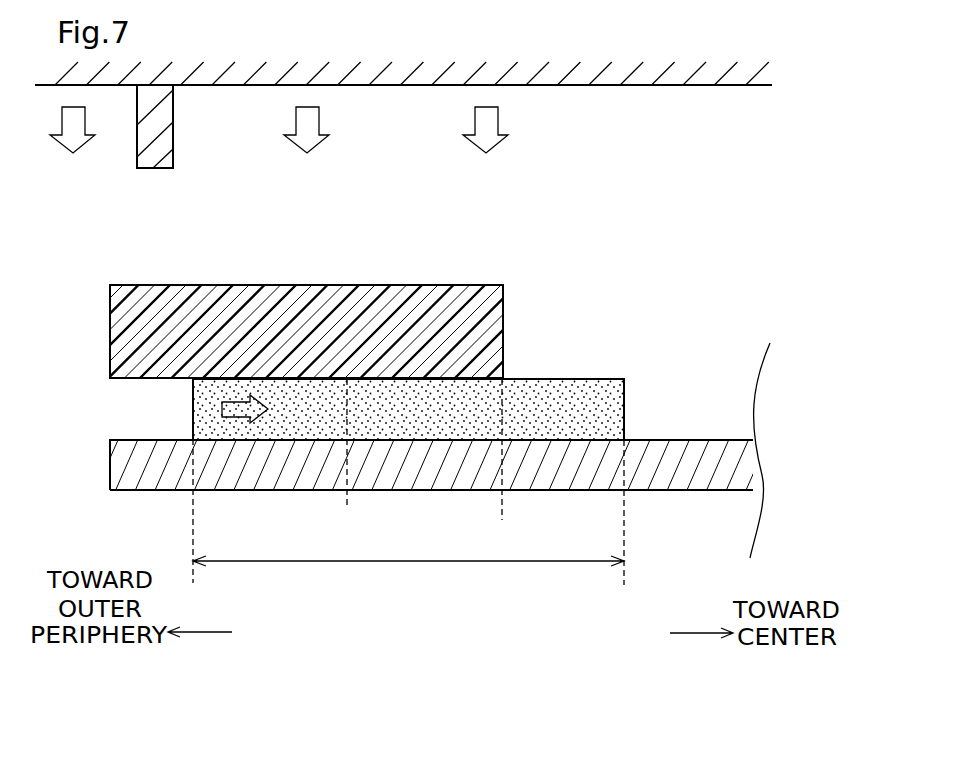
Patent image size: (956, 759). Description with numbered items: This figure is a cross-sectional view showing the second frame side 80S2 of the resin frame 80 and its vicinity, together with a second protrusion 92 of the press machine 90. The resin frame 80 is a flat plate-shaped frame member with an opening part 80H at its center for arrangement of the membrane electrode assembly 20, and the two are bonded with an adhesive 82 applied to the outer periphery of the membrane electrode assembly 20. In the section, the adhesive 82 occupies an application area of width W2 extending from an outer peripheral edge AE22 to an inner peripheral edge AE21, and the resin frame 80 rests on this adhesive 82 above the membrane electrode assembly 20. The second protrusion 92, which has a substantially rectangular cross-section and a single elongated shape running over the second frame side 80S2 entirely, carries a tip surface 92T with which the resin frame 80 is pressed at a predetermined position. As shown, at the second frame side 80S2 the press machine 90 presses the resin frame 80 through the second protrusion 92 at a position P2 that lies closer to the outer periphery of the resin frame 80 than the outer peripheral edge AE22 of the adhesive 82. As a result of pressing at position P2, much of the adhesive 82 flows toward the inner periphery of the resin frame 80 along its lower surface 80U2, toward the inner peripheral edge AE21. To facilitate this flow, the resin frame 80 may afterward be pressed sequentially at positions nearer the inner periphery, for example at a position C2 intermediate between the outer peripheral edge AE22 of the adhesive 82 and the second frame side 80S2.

The press machine 90 is at (657, 105).
The second protrusion 92 is at (173, 143).
The tip surface 92T is at (145, 168).
The resin frame 80 is at (305, 285).
The opening part 80H is at (503, 315).
The lower surface 80U2 is at (160, 380).
The adhesive 82 is at (595, 379).
The membrane electrode assembly 20 is at (703, 452).
The position P2 is at (160, 274).
The position C2 is at (347, 462).
The second frame side 80S2 is at (500, 466).
The outer peripheral edge AE22 is at (181, 497).
The inner peripheral edge AE21 is at (621, 528).
The width W2 is at (408, 574).